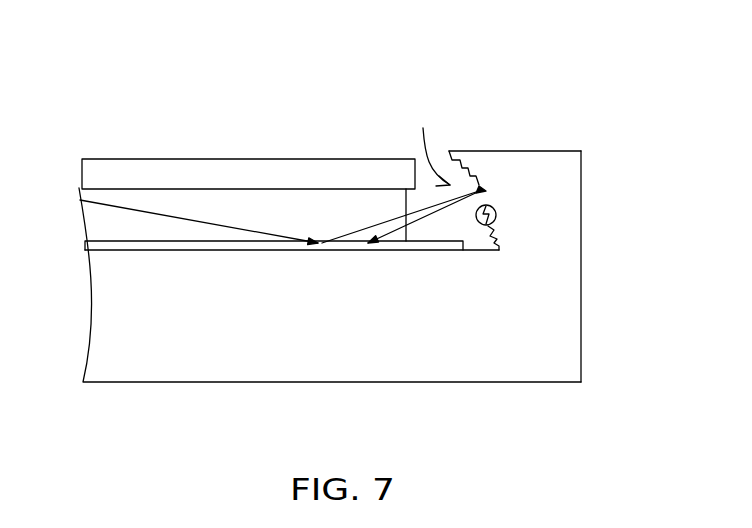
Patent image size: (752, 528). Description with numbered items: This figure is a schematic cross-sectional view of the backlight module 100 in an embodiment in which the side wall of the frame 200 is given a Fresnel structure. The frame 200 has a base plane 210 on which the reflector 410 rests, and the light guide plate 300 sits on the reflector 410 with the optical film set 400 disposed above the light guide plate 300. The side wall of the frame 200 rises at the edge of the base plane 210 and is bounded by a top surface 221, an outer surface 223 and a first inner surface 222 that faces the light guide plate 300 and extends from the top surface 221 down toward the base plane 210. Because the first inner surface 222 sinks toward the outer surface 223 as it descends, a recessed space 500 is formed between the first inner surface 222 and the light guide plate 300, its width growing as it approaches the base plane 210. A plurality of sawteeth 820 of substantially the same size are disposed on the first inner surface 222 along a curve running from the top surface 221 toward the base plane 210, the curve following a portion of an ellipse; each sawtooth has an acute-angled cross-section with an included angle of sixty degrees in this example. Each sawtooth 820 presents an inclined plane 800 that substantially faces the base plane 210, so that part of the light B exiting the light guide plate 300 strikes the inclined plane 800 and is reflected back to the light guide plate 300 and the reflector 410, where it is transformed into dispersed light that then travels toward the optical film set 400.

The backlight module 100 is at (97, 28).
The frame 200 is at (563, 292).
The base plane 210 is at (471, 250).
The top surface 221 is at (515, 151).
The first inner surface 222 is at (474, 180).
The outer surface 223 is at (581, 198).
The light guide plate 300 is at (92, 209).
The optical film set 400 is at (88, 173).
The reflector 410 is at (92, 247).
The recessed space 500 is at (425, 144).
The inclined plane 800 is at (484, 227).
The sawteeth 820 is at (496, 217).
The light B is at (204, 220).